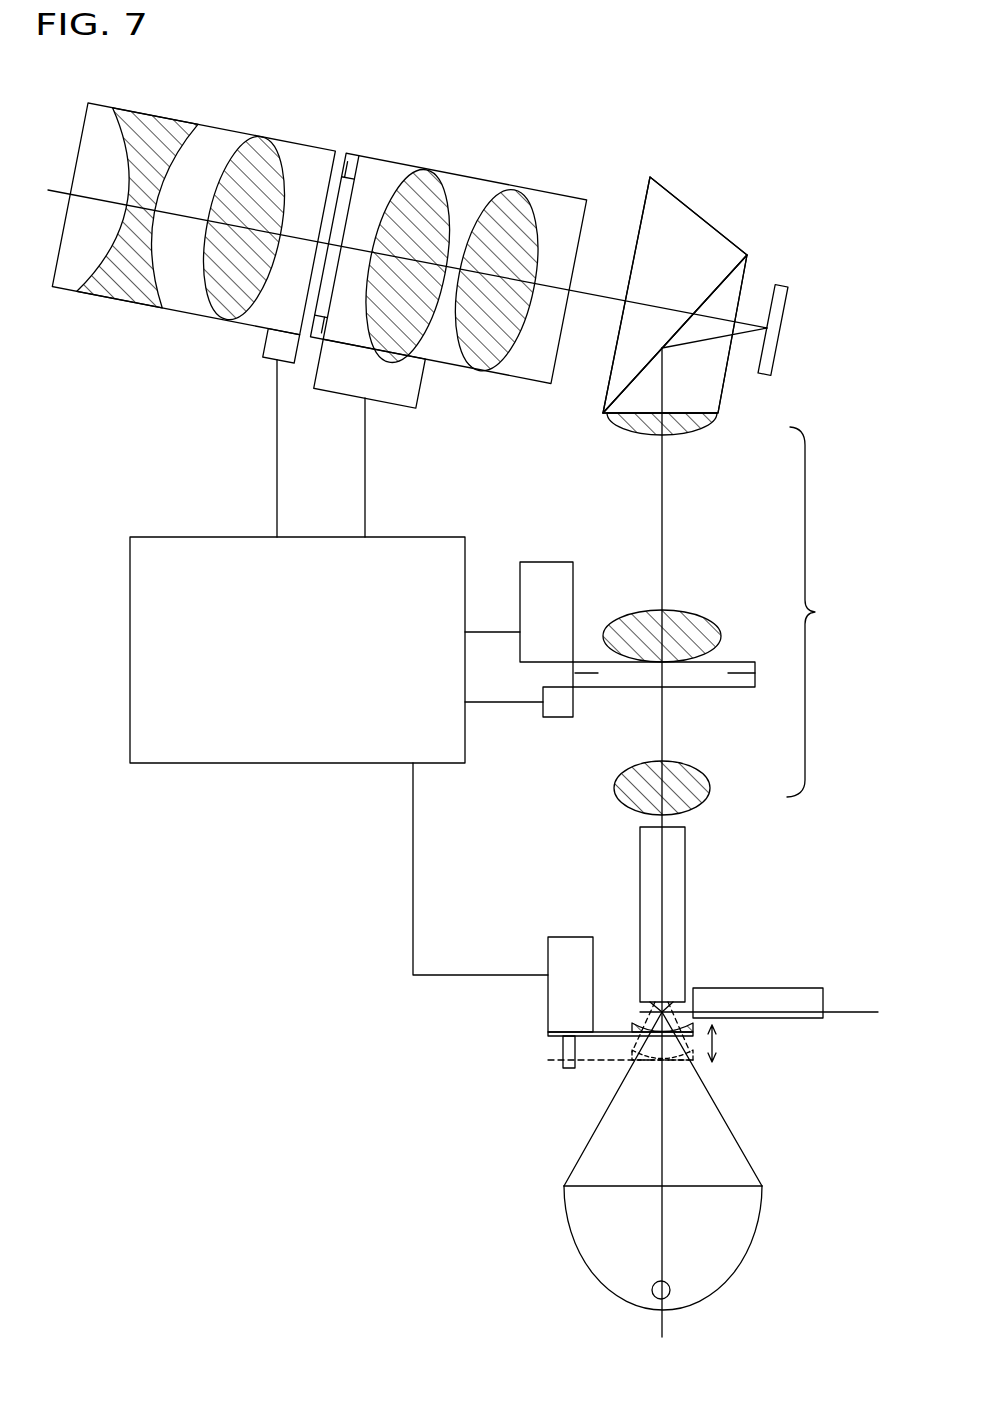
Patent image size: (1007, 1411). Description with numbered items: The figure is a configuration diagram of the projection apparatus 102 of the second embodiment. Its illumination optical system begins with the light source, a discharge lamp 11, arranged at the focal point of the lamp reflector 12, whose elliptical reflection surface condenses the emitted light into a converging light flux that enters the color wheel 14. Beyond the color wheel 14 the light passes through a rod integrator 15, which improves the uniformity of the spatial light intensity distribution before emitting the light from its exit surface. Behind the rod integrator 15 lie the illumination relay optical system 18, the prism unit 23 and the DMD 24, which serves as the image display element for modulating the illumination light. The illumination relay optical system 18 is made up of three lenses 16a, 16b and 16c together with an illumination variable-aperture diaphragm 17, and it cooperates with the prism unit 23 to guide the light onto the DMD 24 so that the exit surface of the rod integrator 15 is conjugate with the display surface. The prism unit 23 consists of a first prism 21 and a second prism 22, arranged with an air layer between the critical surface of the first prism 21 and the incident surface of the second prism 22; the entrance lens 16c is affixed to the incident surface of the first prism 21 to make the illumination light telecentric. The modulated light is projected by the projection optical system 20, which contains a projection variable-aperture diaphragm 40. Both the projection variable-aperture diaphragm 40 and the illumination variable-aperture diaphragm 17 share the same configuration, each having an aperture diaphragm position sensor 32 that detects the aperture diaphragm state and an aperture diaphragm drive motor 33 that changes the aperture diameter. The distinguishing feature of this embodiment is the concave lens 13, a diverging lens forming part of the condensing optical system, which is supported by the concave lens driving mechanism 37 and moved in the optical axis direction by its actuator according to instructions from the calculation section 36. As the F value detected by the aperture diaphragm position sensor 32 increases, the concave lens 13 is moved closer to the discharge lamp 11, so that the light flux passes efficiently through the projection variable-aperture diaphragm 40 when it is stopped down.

The projection apparatus 102 is at (694, 142).
The projection optical system 20 is at (222, 140).
The projection variable-aperture diaphragm 40 is at (352, 175).
The aperture diaphragm position sensor 32 is at (273, 345).
The aperture diaphragm drive motor 33 is at (405, 388).
The calculation section 36 is at (143, 653).
The prism unit 23 is at (817, 218).
The second prism 22 is at (703, 232).
The first prism 21 is at (733, 285).
The DMD 24 is at (777, 316).
The entrance lens 16c is at (700, 423).
The lens 16b is at (708, 633).
The lens 16a is at (698, 783).
The illumination relay optical system 18 is at (820, 612).
The illumination variable-aperture diaphragm 17 is at (713, 684).
The concave lens driving mechanism 37 is at (570, 945).
The rod integrator 15 is at (675, 900).
The color wheel 14 is at (760, 1002).
The concave lens 13 is at (640, 1025).
The lamp reflector 12 is at (595, 1270).
The discharge lamp 11 is at (670, 1289).